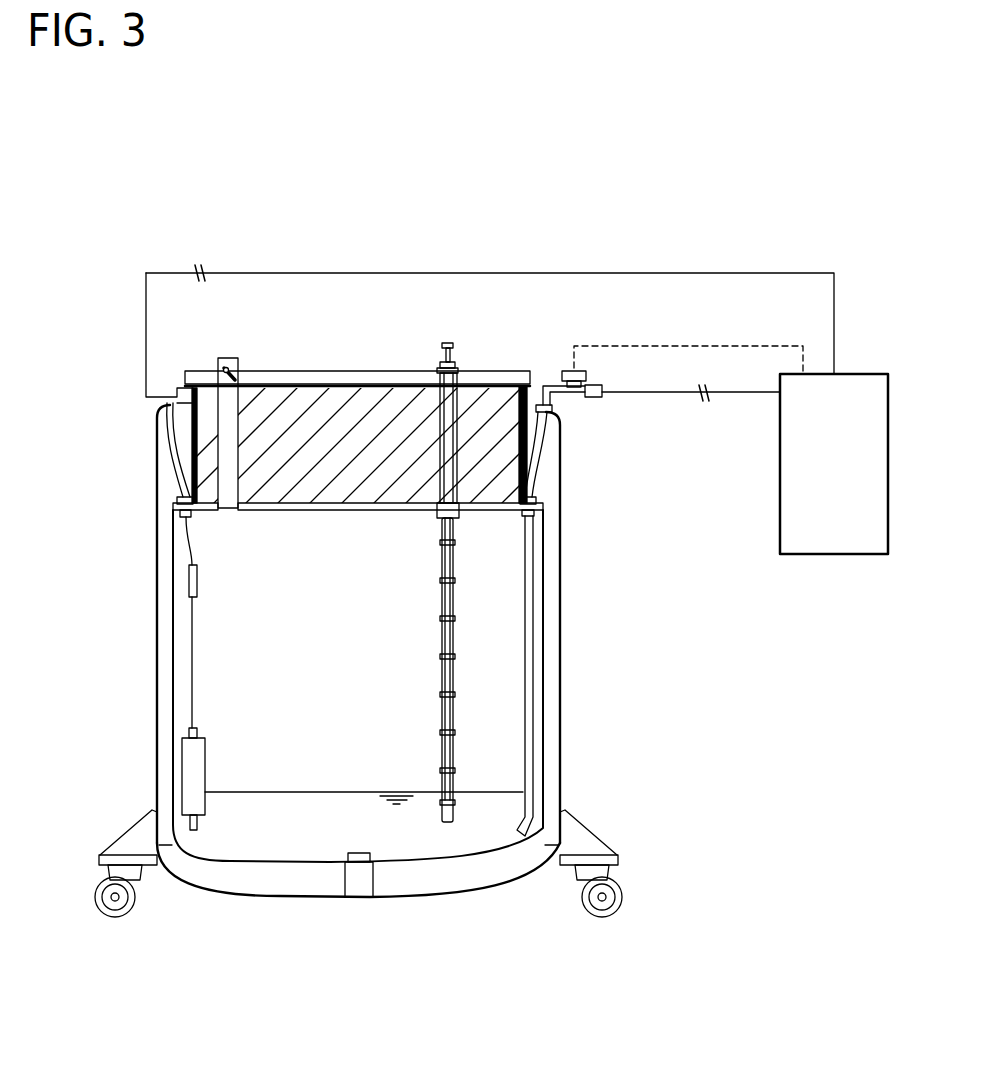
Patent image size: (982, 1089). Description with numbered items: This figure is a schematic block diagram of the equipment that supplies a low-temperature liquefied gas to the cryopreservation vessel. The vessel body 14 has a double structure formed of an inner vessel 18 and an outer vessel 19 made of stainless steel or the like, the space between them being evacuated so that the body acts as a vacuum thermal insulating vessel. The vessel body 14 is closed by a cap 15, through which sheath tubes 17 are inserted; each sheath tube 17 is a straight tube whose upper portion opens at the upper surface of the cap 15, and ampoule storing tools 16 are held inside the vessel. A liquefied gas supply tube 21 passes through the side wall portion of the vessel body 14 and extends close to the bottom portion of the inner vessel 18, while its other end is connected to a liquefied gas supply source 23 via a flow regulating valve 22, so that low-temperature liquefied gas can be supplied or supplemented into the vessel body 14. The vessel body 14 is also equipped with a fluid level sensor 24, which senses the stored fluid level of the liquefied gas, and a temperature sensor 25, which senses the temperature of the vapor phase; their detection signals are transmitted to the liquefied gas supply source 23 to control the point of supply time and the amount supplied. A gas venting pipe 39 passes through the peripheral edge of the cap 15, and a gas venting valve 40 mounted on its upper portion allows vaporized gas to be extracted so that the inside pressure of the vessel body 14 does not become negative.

The vessel body 14 is at (588, 536).
The cap 15 is at (396, 420).
The ampoule storing tool 16 is at (453, 632).
The sheath tube 17 is at (458, 530).
The inner vessel 18 is at (546, 645).
The outer vessel 19 is at (561, 588).
The liquefied gas supply tube 21 is at (637, 395).
The flow regulating valve 22 is at (567, 370).
The liquefied gas supply source 23 is at (836, 542).
The fluid level sensor 24 is at (190, 765).
The temperature sensor 25 is at (188, 580).
The gas venting pipe 39 is at (242, 414).
The gas venting valve 40 is at (224, 368).